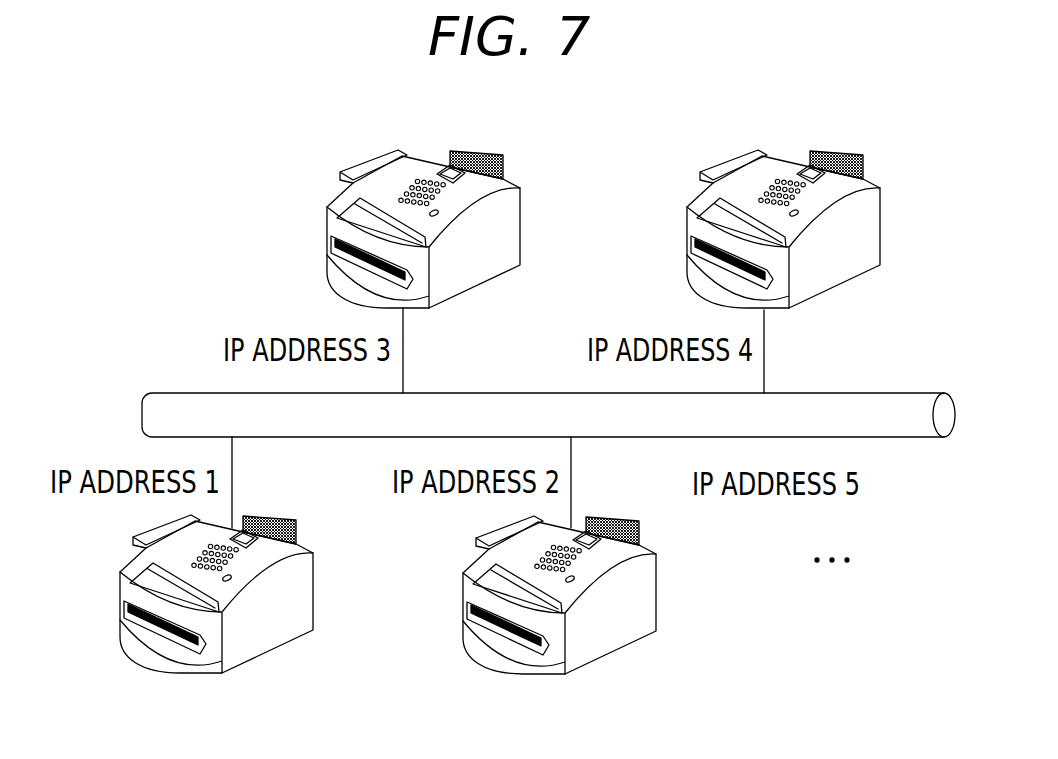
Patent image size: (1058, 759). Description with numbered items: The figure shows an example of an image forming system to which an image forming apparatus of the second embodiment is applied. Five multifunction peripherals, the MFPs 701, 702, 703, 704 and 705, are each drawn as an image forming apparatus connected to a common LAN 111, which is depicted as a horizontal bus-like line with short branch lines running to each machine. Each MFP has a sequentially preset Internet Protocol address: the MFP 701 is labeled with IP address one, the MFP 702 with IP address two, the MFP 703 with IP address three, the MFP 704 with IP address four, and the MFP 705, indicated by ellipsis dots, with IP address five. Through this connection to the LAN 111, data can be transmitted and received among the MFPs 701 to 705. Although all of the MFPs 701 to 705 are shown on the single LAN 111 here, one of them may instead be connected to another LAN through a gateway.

The LAN 111 is at (900, 392).
The MFP 701 is at (315, 592).
The MFP 702 is at (656, 592).
The MFP 703 is at (327, 242).
The MFP 704 is at (687, 240).
The MFP 705 is at (830, 567).